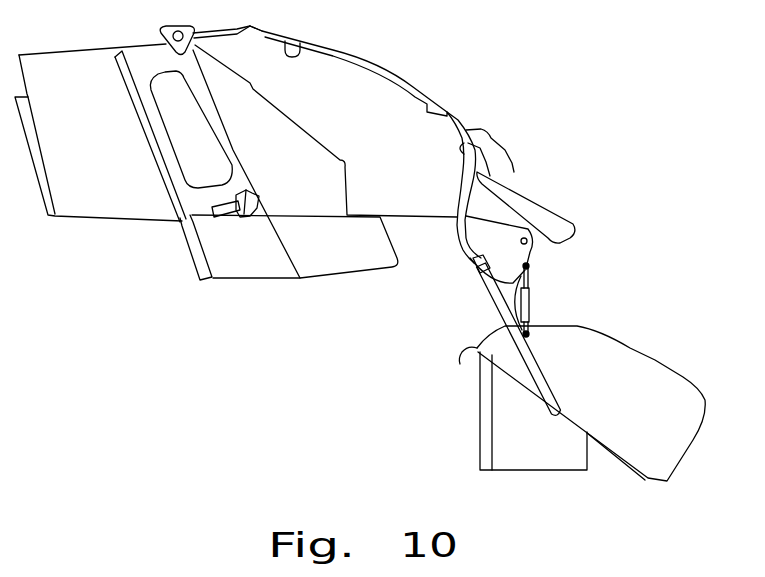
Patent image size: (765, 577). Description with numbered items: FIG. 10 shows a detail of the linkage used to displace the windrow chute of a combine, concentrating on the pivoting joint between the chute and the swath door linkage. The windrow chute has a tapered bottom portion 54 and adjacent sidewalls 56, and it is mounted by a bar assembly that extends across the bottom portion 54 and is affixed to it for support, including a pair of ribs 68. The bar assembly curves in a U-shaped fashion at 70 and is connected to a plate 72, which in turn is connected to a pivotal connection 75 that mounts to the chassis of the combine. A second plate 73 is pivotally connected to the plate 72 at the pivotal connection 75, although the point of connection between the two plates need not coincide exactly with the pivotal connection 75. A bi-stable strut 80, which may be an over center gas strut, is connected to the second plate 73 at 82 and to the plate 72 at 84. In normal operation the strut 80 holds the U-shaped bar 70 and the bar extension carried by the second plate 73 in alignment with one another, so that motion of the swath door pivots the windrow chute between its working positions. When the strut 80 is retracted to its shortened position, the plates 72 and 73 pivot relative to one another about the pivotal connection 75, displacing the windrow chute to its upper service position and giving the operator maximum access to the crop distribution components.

The bottom portion 54 is at (648, 481).
The sidewalls 56 is at (663, 433).
The ribs 68 is at (608, 448).
The U-shaped curve of bar assembly 70 is at (502, 313).
The plate 72 is at (505, 292).
The second plate 73 is at (507, 240).
The pivotal connection 75 is at (528, 264).
The bi-stable strut 80 is at (529, 297).
The strut connection to second plate 82 is at (529, 284).
The strut connection to plate 84 is at (528, 334).